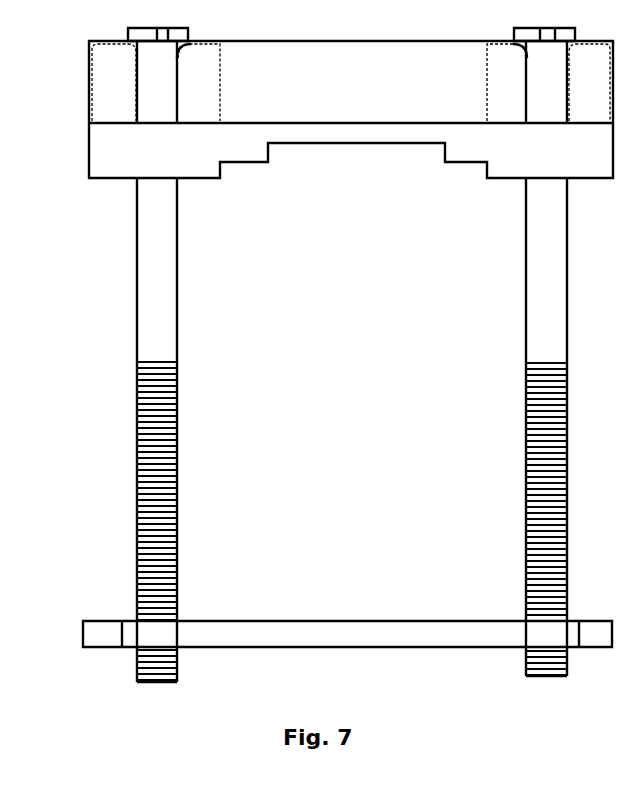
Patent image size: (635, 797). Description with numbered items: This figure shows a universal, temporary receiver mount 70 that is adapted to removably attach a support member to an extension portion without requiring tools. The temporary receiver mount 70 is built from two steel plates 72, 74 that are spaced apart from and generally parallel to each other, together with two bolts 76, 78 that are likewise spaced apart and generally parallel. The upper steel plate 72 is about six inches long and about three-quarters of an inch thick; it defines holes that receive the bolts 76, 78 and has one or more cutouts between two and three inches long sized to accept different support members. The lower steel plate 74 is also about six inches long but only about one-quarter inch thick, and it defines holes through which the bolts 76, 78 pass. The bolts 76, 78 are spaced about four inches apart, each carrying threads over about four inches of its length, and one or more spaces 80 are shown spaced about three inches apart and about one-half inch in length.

The temporary receiver mount 70 is at (128, 220).
The steel plate 72 is at (351, 109).
The steel plate 74 is at (310, 630).
The bolt 76 is at (155, 288).
The bolt 78 is at (535, 262).
The space 80 is at (203, 58).